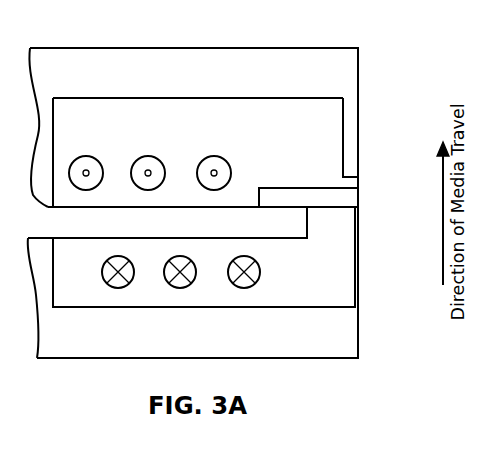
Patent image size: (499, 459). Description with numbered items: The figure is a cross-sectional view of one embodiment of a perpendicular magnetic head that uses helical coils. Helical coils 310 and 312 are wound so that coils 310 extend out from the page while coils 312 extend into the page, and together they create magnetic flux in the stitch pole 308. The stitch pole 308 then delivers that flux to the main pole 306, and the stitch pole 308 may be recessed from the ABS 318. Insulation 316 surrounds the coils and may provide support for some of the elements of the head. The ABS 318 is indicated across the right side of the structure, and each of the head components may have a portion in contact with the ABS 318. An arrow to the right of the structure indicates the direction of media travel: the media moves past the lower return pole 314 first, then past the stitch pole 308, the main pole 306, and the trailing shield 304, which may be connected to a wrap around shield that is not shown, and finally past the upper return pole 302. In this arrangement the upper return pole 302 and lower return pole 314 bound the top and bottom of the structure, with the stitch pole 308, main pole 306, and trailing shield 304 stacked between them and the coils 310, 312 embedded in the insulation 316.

The upper return pole 302 is at (273, 85).
The trailing shield 304 is at (358, 146).
The main pole 306 is at (358, 196).
The stitch pole 308 is at (223, 233).
The helical coils 310 is at (88, 156).
The helical coils 312 is at (102, 277).
The lower return pole 314 is at (221, 343).
The insulation 316 is at (309, 150).
The ABS 318 is at (359, 68).